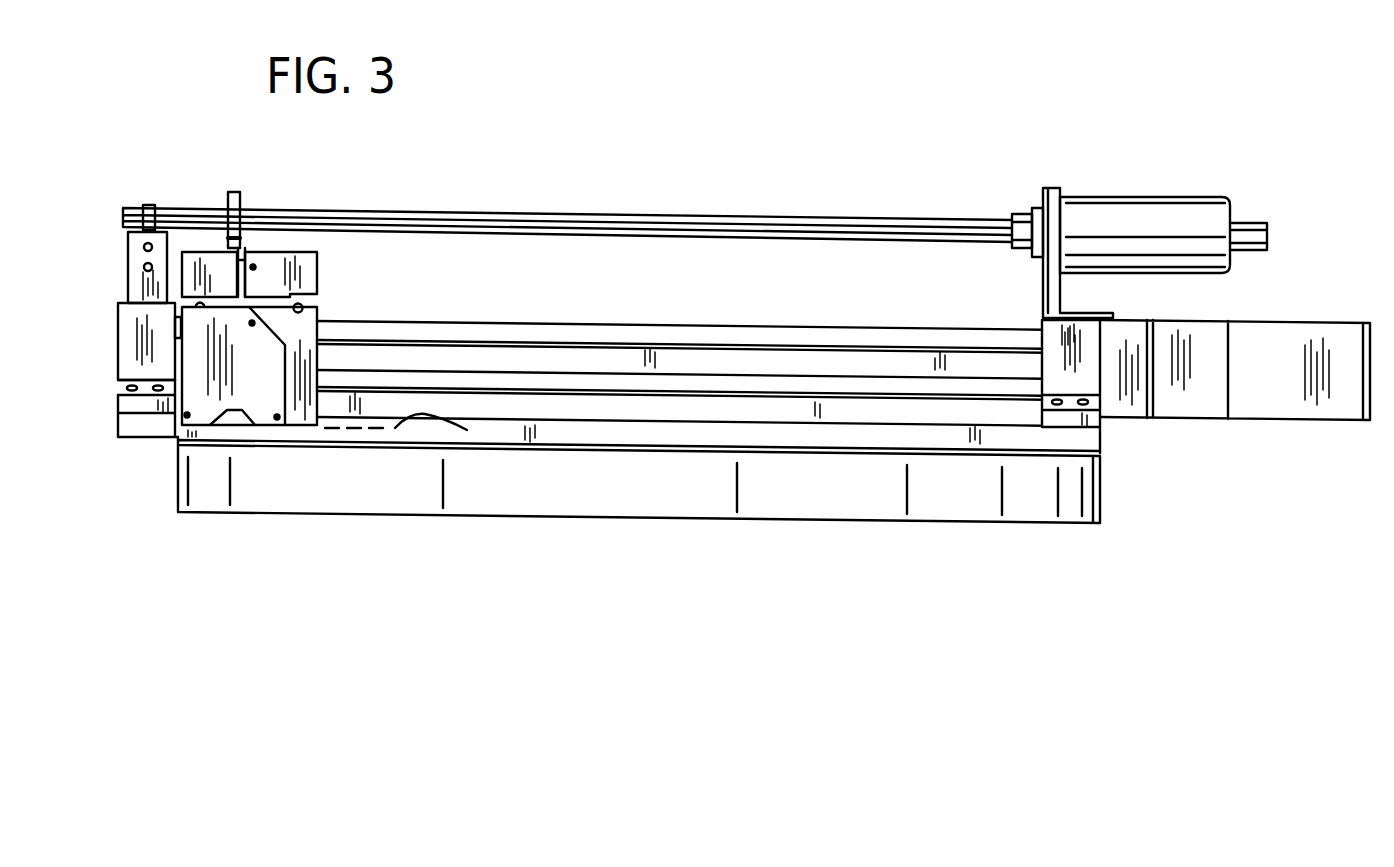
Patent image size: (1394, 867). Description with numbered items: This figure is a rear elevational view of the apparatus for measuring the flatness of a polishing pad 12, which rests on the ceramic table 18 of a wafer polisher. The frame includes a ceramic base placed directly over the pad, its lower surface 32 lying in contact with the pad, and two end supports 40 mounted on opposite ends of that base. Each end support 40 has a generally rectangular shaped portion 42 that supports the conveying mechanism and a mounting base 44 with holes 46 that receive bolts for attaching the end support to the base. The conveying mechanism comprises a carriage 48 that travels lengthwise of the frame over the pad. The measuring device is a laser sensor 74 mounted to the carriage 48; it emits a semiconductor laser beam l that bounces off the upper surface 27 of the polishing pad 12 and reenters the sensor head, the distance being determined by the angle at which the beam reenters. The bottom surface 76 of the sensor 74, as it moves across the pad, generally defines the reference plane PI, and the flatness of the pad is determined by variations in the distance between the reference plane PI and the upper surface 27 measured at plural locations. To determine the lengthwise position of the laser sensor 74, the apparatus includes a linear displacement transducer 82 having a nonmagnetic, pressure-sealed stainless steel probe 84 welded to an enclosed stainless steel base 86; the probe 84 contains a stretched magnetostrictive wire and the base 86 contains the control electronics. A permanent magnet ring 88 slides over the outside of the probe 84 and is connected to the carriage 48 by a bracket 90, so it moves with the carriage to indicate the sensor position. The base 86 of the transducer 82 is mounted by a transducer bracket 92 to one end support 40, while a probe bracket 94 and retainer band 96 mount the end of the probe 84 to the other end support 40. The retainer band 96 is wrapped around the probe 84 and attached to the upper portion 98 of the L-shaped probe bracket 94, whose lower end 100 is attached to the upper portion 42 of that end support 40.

The polishing pad 12 is at (1100, 456).
The ceramic table 18 is at (454, 500).
The upper surface of the polishing pad 27 is at (372, 440).
The lower surface of the base 32 is at (957, 458).
The end support 40 is at (118, 430).
The rectangular shaped portion of the end support 42 is at (120, 335).
The mounting base of the end support 44 is at (118, 398).
The holes 46 is at (158, 398).
The carriage 48 is at (590, 355).
The laser sensor 74 is at (318, 312).
The bottom surface of the sensor 76 is at (304, 428).
The linear displacement transducer 82 is at (1214, 210).
The probe 84 is at (612, 218).
The transducer base 86 is at (1143, 213).
The permanent magnet ring 88 is at (231, 192).
The bracket 90 is at (250, 238).
The transducer bracket 92 is at (1043, 285).
The probe bracket 94 is at (128, 284).
The retainer band 96 is at (147, 206).
The upper portion of the probe bracket 98 is at (1052, 186).
The lower end of the probe bracket 100 is at (1105, 312).
The reference plane PI is at (414, 428).
The semiconductor laser beam l is at (240, 428).